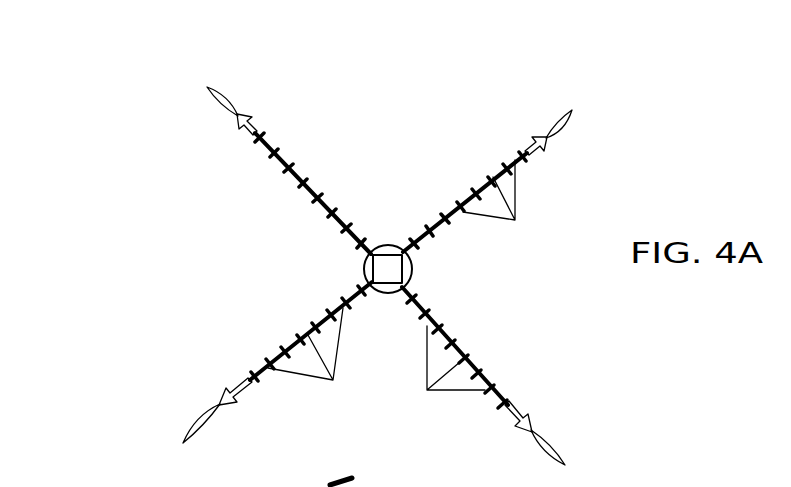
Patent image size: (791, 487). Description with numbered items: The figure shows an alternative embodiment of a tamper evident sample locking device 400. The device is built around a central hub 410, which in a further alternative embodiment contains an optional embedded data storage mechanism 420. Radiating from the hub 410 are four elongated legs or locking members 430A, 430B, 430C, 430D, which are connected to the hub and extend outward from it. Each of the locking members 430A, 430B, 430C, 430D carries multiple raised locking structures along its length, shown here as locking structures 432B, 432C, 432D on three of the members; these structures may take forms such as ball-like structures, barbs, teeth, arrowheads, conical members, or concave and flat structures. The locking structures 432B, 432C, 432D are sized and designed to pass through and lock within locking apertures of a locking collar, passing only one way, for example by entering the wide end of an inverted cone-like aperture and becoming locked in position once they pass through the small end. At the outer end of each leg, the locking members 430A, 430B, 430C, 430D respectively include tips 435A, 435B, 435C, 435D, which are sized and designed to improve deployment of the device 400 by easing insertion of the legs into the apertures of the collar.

The sample locking device 400 is at (118, 200).
The central hub 410 is at (388, 266).
The embedded data storage mechanism 420 is at (395, 249).
The locking member 430A is at (268, 142).
The locking member 430B is at (516, 162).
The locking member 430C is at (510, 398).
The locking member 430D is at (247, 380).
The locking structure 432B is at (525, 210).
The locking structure 432C is at (444, 380).
The locking structure 432D is at (329, 364).
The tip 435A is at (228, 93).
The tip 435B is at (574, 113).
The tip 435C is at (560, 453).
The tip 435D is at (192, 425).